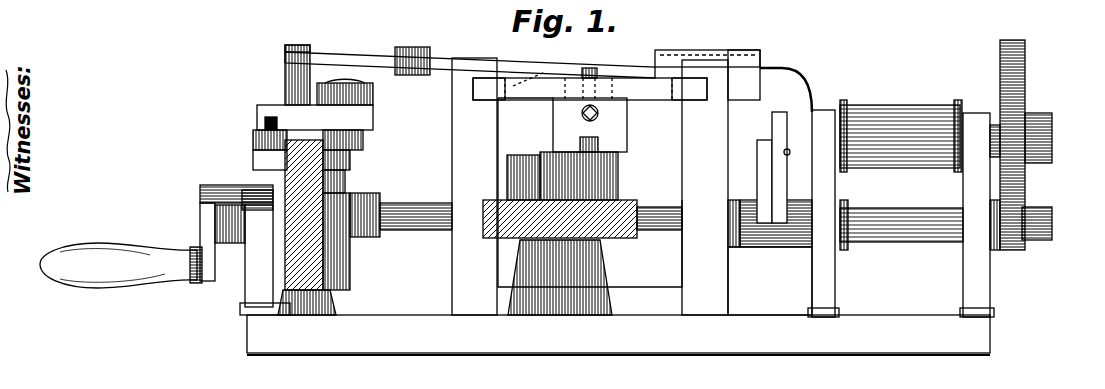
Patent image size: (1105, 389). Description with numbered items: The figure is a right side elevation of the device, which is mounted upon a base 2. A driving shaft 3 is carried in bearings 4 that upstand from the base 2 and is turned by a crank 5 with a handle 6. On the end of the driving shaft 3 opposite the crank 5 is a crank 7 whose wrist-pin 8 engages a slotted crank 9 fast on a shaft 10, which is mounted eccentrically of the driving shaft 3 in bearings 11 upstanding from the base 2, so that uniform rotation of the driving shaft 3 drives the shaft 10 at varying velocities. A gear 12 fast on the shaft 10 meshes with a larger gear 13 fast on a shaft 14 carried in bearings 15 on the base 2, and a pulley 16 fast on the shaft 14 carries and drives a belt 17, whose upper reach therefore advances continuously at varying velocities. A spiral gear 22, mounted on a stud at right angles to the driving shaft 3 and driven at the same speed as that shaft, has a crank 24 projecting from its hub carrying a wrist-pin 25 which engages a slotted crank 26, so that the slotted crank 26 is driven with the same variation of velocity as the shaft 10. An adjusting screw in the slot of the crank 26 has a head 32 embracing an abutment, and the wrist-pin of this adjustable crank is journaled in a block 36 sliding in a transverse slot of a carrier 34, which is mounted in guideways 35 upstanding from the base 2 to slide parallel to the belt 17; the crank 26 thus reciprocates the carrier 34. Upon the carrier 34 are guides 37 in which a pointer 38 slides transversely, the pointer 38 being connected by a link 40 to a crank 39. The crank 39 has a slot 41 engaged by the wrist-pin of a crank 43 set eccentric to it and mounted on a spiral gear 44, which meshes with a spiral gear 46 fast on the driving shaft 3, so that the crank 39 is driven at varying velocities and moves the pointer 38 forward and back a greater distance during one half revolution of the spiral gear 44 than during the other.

The base 2 is at (618, 335).
The driving shaft 3 is at (420, 232).
The bearings 4 is at (256, 190).
The crank 5 is at (204, 241).
The handle 6 is at (118, 265).
The crank 7 is at (757, 176).
The wrist-pin 8 is at (789, 150).
The slotted crank 9 is at (778, 183).
The shaft 10 is at (920, 232).
The bearings 11 is at (850, 243).
The gear 12 is at (1015, 245).
The gear 13 is at (1026, 76).
The shaft 14 is at (1054, 138).
The bearings 15 is at (826, 118).
The pulley 16 is at (955, 170).
The belt 17 is at (920, 112).
The spiral gear 22 is at (630, 200).
The crank 24 is at (592, 160).
The wrist-pin 25 is at (597, 147).
The slotted crank 26 is at (565, 126).
The head 32 is at (599, 113).
The carrier 34 is at (590, 89).
The guideways 35 is at (473, 88).
The block 36 is at (602, 78).
The guides 37 is at (740, 72).
The pointer 38 is at (777, 68).
The crank 39 is at (315, 136).
The link 40 is at (341, 56).
The slot 41 is at (267, 117).
The crank 43 is at (266, 165).
The spiral gear 44 is at (370, 199).
The spiral gear 46 is at (290, 282).